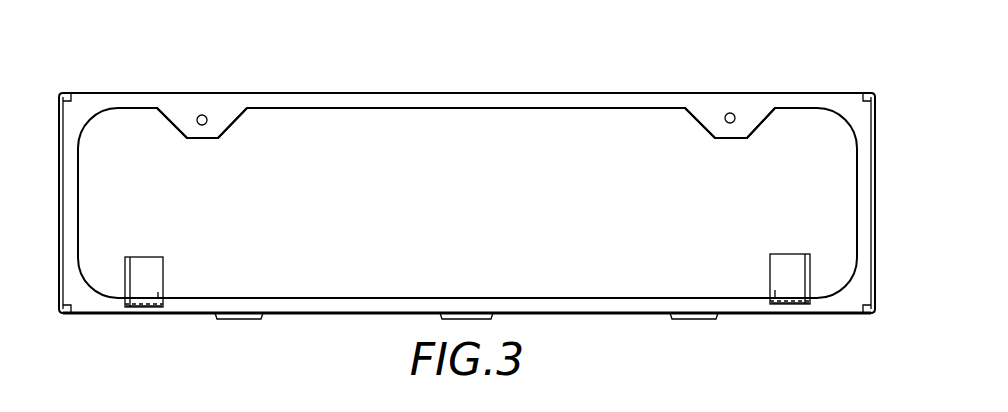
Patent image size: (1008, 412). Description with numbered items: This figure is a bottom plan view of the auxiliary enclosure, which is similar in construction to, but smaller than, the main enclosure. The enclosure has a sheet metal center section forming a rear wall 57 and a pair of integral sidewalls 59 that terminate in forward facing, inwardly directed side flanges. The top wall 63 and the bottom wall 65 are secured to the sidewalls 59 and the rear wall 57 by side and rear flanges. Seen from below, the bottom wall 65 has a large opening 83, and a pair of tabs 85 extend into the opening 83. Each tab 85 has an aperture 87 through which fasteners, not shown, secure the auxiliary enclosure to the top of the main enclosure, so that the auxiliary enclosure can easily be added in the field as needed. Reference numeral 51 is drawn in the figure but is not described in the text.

The battery cell 51 is at (146, 250).
The rear wall 57 is at (143, 318).
The sidewalls 59 is at (59, 117).
The top wall 63 is at (93, 193).
The bottom wall 65 is at (102, 102).
The opening 83 is at (448, 108).
The tabs 85 is at (237, 122).
The apertures 87 is at (196, 123).